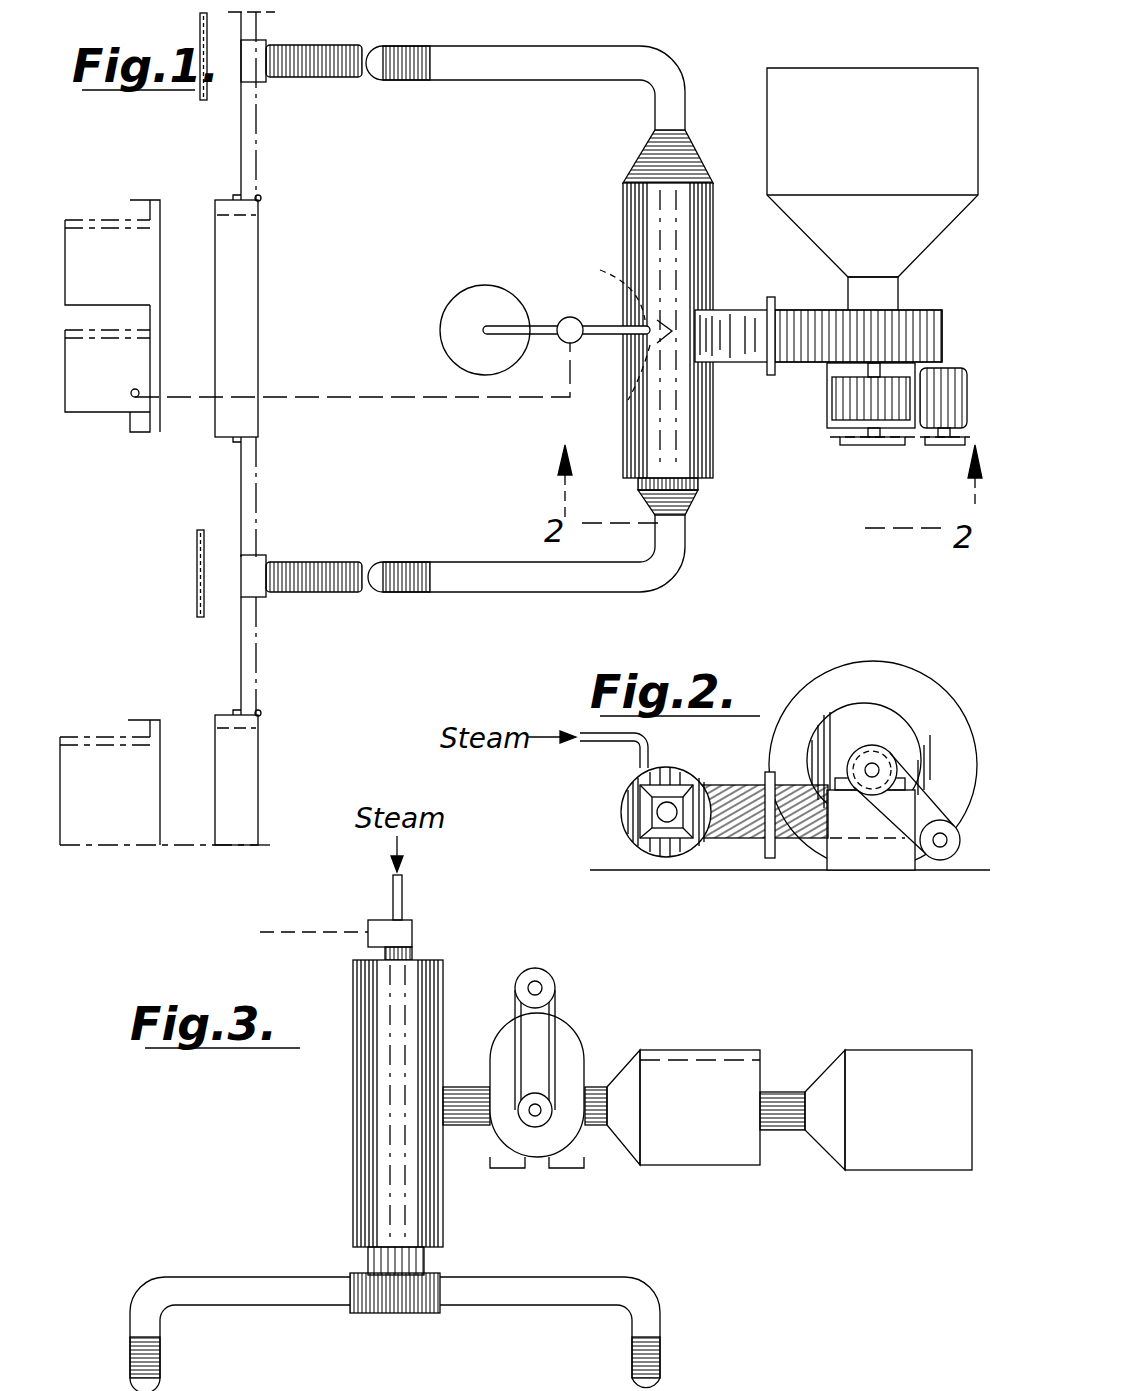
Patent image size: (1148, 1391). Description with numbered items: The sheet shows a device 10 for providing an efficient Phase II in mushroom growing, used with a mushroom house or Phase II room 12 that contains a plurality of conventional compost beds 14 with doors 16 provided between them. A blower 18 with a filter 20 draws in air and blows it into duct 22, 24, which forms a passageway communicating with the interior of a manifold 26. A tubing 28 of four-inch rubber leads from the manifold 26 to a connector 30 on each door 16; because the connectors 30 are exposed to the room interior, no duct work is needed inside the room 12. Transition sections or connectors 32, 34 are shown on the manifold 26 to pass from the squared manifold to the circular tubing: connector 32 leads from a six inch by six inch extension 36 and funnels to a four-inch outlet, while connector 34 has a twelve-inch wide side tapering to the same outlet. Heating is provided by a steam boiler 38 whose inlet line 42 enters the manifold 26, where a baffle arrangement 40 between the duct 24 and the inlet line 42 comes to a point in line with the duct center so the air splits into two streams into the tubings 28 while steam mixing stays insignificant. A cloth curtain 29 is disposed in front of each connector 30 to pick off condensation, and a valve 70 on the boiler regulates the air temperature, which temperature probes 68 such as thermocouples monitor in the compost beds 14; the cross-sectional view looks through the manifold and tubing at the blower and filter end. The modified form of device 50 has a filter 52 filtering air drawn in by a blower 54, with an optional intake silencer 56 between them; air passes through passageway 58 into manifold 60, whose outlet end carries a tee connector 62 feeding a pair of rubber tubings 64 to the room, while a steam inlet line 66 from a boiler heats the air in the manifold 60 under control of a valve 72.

In FIG. 1, the device 10 is at (716, 95).
In FIG. 1, the mushroom house or Phase II room 12 is at (163, 166).
In FIG. 1, the compost beds 14 is at (125, 278).
In FIG. 1, the doors 16 is at (250, 160).
In FIG. 1, the blower 18 is at (850, 338).
In FIG. 2, the blower 18 is at (850, 730).
In FIG. 1, the filter 20 is at (915, 105).
In FIG. 2, the filter 20 is at (915, 705).
In FIG. 1, the duct 22 is at (875, 298).
In FIG. 1, the duct 24 is at (745, 308).
In FIG. 2, the duct 24 is at (727, 795).
In FIG. 1, the manifold 26 is at (695, 440).
In FIG. 2, the manifold 26 is at (685, 782).
In FIG. 1, the tubing 28 is at (542, 65).
In FIG. 2, the tubing 28 is at (650, 803).
In FIG. 1, the curtain 29 is at (203, 100).
In FIG. 1, the connector 30 is at (260, 62).
In FIG. 1, the transition section or connector 32 is at (695, 505).
In FIG. 2, the transition section or connector 32 is at (650, 828).
In FIG. 1, the transition section or connector 34 is at (683, 172).
In FIG. 1, the extension 36 is at (700, 484).
In FIG. 1, the steam boiler 38 is at (490, 296).
In FIG. 1, the baffle arrangement 40 is at (626, 327).
In FIG. 1, the inlet line 42 is at (605, 336).
In FIG. 3, the modified form of device 50 is at (608, 1030).
In FIG. 3, the filter 52 is at (900, 1075).
In FIG. 3, the blower 54 is at (565, 1060).
In FIG. 3, the intake silencer 56 is at (712, 1085).
In FIG. 3, the passageway 58 is at (462, 1105).
In FIG. 3, the manifold 60 is at (375, 1135).
In FIG. 3, the tee connector 62 is at (400, 1265).
In FIG. 3, the rubber tubing 64 is at (308, 1292).
In FIG. 3, the steam inlet line 66 is at (402, 898).
In FIG. 1, the temperature probes 68 is at (132, 398).
In FIG. 1, the valve 70 is at (560, 320).
In FIG. 3, the valve 72 is at (412, 935).